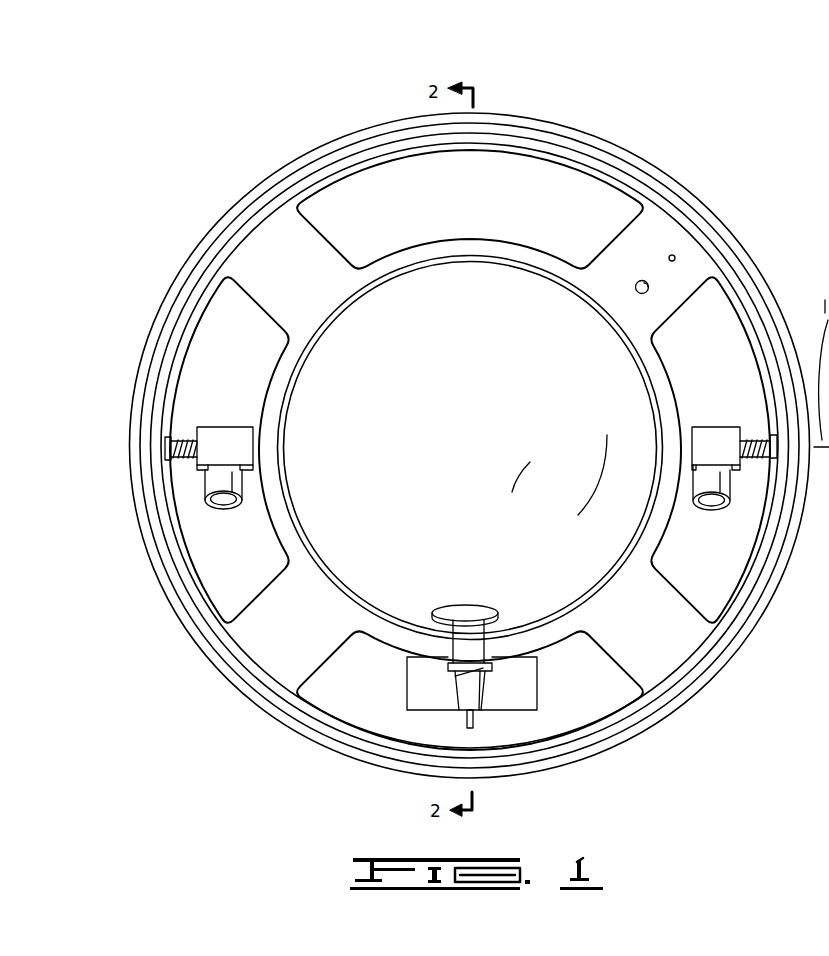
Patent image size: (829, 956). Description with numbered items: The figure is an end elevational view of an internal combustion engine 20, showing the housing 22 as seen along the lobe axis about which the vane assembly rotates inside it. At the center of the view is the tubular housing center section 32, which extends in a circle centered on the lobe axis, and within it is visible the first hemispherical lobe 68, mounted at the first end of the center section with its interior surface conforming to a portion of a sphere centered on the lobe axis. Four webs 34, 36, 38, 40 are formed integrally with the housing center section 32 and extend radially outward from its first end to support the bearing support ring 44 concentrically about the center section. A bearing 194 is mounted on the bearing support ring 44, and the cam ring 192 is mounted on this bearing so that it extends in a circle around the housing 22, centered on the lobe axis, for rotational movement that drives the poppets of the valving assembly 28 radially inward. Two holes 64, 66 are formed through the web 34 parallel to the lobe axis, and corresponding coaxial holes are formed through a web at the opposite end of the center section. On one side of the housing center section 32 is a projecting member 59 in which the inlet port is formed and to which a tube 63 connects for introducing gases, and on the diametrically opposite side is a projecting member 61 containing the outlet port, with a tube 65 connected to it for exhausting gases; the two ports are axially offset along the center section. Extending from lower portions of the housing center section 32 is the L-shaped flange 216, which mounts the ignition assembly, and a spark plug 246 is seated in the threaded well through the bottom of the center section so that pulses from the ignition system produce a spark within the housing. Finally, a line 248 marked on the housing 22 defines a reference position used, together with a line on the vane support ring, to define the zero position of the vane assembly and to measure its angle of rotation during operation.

The internal combustion engine 20 is at (690, 163).
The housing 22 is at (678, 357).
The valving assembly 28 is at (590, 125).
The housing center section 32 is at (678, 398).
The web 34 is at (650, 265).
The web 36 is at (297, 278).
The web 38 is at (303, 638).
The web 40 is at (667, 643).
The bearing support ring 44 is at (398, 148).
The projecting member 59 is at (718, 433).
The projecting member 61 is at (213, 437).
The tube 63 is at (718, 477).
The hole 64 is at (649, 286).
The tube 65 is at (220, 480).
The hole 66 is at (675, 258).
The first hemispherical lobe 68 is at (483, 445).
The cam ring 192 is at (628, 153).
The bearing 194 is at (525, 132).
The L-shaped flange 216 is at (533, 697).
The spark plug 246 is at (482, 697).
The line 248 is at (815, 373).